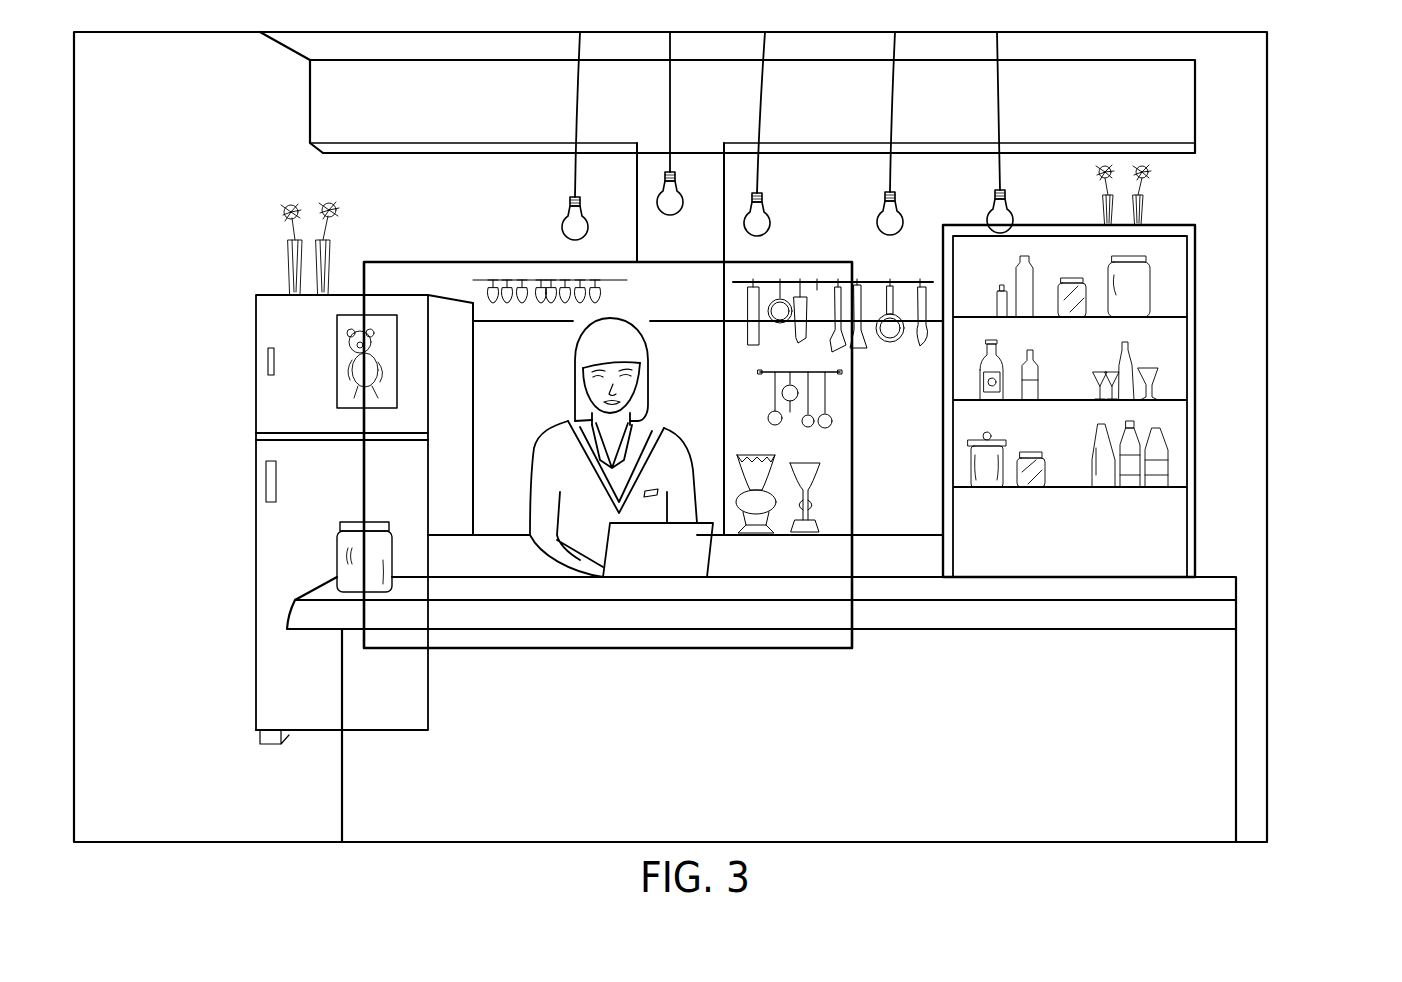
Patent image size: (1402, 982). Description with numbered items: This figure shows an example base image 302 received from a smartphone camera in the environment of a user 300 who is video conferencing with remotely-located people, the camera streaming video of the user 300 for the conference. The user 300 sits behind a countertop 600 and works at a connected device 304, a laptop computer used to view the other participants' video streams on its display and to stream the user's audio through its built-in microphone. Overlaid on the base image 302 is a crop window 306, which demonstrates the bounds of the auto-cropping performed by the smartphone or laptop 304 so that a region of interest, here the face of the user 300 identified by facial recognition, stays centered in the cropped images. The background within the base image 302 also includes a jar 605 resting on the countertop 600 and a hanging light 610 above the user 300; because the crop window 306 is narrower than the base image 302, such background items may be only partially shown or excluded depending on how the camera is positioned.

The base image 302 is at (737, 437).
The crop window 306 is at (438, 261).
The hanging light 610 is at (570, 214).
The user 300 is at (567, 428).
The connected device 304 is at (707, 552).
The jar 605 is at (337, 570).
The countertop 600 is at (538, 630).